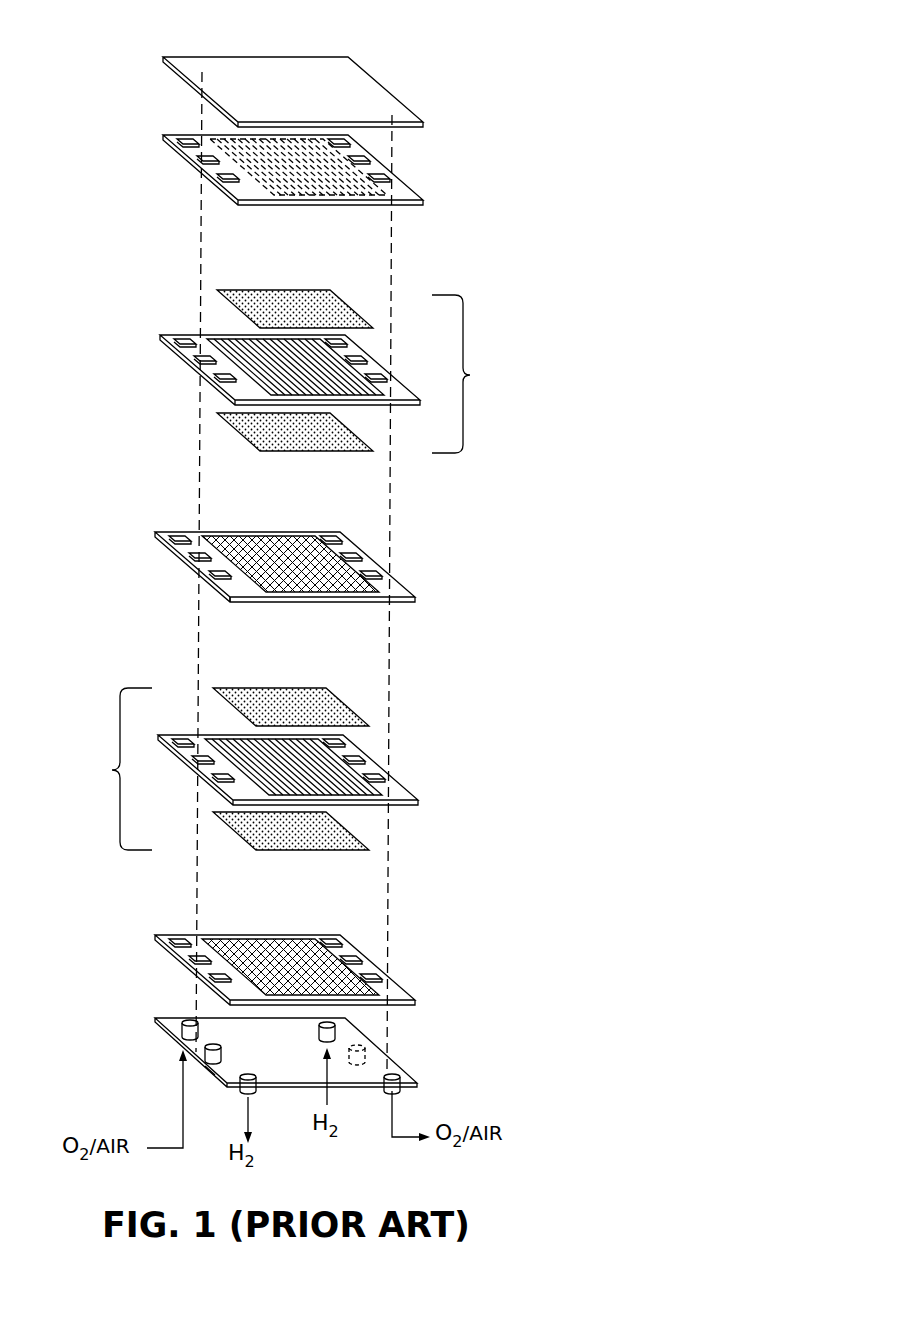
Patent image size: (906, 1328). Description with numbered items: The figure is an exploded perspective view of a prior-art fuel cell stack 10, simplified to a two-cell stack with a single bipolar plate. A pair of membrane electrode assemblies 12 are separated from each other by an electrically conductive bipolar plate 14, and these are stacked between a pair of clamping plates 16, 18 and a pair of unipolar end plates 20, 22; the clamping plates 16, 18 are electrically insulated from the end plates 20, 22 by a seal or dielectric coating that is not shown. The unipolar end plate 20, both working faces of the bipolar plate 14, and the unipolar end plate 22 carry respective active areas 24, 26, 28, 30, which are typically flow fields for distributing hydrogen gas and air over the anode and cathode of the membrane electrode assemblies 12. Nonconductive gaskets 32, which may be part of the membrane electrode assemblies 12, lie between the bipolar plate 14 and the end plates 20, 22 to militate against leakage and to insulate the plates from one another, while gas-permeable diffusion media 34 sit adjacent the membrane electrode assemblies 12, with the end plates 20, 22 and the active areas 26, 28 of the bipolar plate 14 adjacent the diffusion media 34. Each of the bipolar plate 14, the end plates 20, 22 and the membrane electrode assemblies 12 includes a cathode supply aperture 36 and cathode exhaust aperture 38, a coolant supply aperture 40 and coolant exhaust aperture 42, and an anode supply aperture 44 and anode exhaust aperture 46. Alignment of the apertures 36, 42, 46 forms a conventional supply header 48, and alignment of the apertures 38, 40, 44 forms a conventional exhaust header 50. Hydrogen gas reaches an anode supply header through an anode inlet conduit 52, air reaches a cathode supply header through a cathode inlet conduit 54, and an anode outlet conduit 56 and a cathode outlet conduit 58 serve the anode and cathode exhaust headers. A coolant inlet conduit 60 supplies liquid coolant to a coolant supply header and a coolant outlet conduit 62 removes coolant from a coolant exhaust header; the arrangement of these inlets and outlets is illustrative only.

The fuel cell stack 10 is at (505, 62).
The membrane electrode assembly 12 is at (295, 572).
The bipolar plate 14 is at (292, 554).
The clamping plate 16 is at (178, 81).
The clamping plate 18 is at (287, 1089).
The unipolar end plate 20 is at (243, 174).
The unipolar end plate 22 is at (337, 970).
The active area 24 is at (200, 173).
The active area 26 is at (353, 549).
The active area 28 is at (217, 589).
The active area 30 is at (360, 972).
The nonconductive gasket 32 is at (197, 343).
The gas-permeable diffusion media 34 is at (245, 311).
The cathode supply aperture 36 is at (185, 540).
The cathode exhaust aperture 38 is at (392, 586).
The coolant supply aperture 40 is at (340, 560).
The coolant exhaust aperture 42 is at (198, 568).
The anode supply aperture 44 is at (343, 538).
The anode exhaust aperture 46 is at (248, 595).
The supply header 48 is at (190, 1020).
The exhaust header 50 is at (392, 493).
The anode inlet conduit 52 is at (336, 1024).
The cathode inlet conduit 54 is at (200, 1046).
The anode outlet conduit 56 is at (247, 1093).
The cathode outlet conduit 58 is at (399, 1087).
The coolant inlet conduit 60 is at (210, 1075).
The coolant outlet conduit 62 is at (363, 1053).